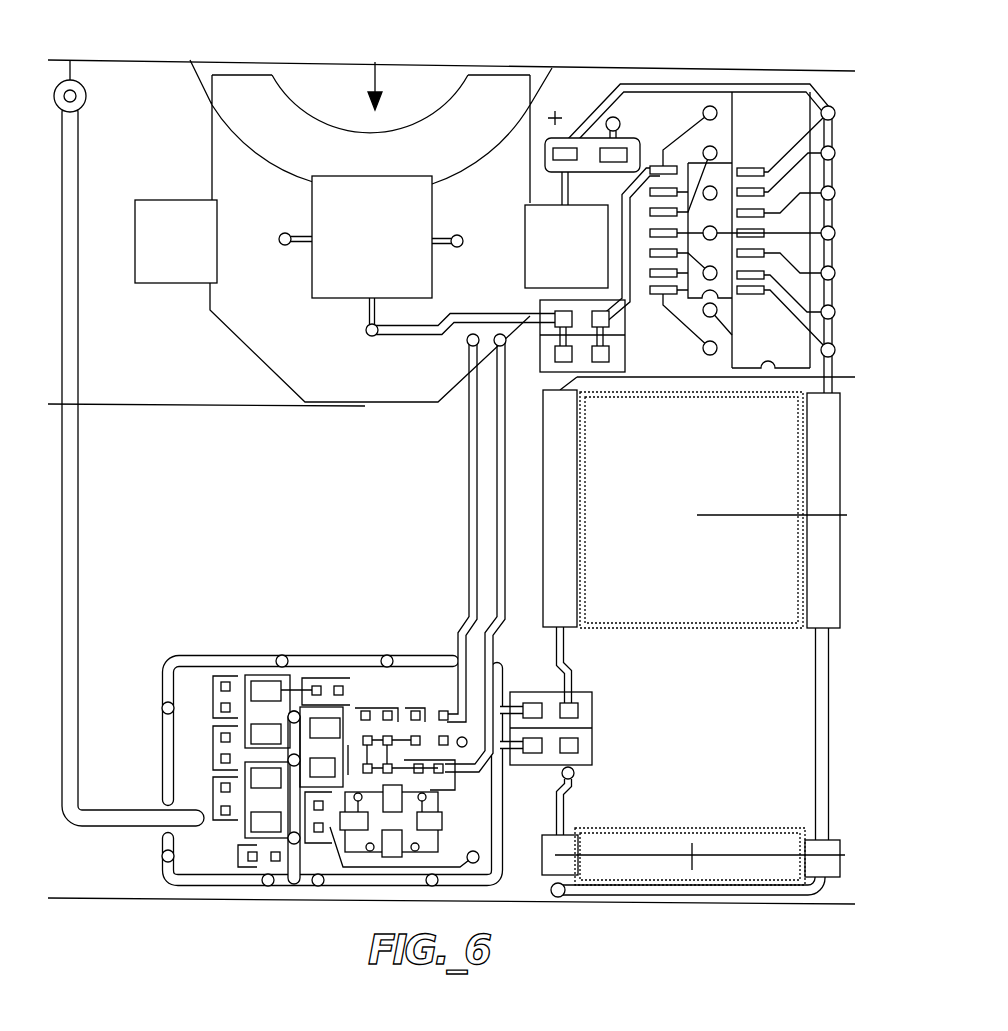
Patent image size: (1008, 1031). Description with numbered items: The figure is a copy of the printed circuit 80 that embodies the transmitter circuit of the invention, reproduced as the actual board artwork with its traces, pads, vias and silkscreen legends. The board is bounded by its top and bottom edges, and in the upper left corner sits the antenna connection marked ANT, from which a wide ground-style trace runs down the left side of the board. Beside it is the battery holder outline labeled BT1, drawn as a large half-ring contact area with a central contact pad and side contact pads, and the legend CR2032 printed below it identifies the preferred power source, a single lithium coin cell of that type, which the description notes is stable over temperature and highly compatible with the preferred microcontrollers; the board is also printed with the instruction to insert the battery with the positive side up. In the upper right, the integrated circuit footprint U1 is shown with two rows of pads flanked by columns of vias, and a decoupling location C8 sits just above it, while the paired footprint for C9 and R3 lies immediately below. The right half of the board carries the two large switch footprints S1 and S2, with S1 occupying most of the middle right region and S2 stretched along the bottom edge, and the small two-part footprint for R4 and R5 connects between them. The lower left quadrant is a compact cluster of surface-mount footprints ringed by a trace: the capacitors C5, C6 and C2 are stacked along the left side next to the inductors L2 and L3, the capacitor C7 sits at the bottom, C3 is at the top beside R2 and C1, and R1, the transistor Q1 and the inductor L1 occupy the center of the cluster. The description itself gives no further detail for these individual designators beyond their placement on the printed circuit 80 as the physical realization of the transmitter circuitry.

The printed circuit 80 is at (451, 454).
The antenna ANT is at (92, 86).
The battery holder BT1 is at (371, 231).
The lithium coin cell type CR2032 is at (375, 431).
The capacitor C8 is at (592, 131).
The integrated circuit U1 is at (742, 222).
The capacitor C9 is at (598, 336).
The resistor R3 is at (605, 351).
The switch S1 is at (695, 523).
The resistor R4 is at (551, 718).
The resistor R5 is at (548, 767).
The switch S2 is at (693, 848).
The capacitor C5 is at (208, 697).
The capacitor C6 is at (208, 748).
The capacitor C2 is at (208, 798).
The inductor L2 is at (267, 711).
The inductor L3 is at (267, 800).
The capacitor C7 is at (240, 856).
The capacitor C3 is at (339, 691).
The resistor R2 is at (388, 703).
The capacitor C1 is at (426, 703).
The resistor R1 is at (441, 778).
The transistor Q1 is at (401, 755).
The inductor L1 is at (321, 747).